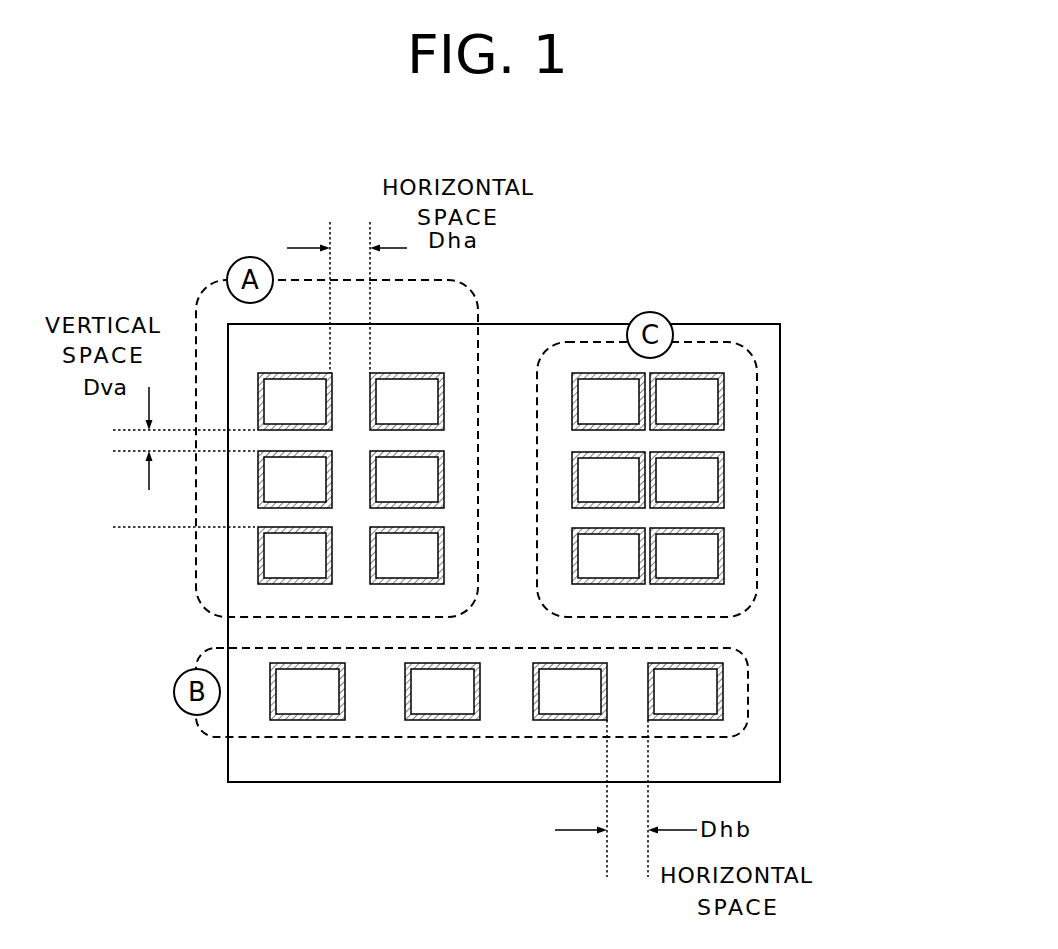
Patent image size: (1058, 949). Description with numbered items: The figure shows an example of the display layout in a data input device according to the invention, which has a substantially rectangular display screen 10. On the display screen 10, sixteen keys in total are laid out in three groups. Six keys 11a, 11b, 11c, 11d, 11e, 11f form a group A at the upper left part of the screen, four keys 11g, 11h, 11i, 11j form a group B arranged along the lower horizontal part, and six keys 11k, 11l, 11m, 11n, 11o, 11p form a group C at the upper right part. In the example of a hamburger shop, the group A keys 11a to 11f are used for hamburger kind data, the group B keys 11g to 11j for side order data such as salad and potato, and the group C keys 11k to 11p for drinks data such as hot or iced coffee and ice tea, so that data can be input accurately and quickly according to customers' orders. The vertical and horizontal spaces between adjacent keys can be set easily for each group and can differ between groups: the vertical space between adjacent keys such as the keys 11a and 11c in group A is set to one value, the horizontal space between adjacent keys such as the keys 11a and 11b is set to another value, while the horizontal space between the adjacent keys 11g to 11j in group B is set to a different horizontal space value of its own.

The display screen 10 is at (805, 492).
The key 11a is at (295, 401).
The key 11b is at (407, 401).
The key 11c is at (295, 479).
The key 11d is at (407, 479).
The key 11e is at (295, 555).
The key 11f is at (407, 555).
The key 11g is at (307, 691).
The key 11h is at (442, 691).
The key 11i is at (570, 691).
The key 11j is at (685, 691).
The key 11k is at (608, 401).
The key 11l is at (687, 401).
The key 11m is at (608, 480).
The key 11n is at (687, 480).
The key 11o is at (608, 556).
The key 11p is at (687, 556).